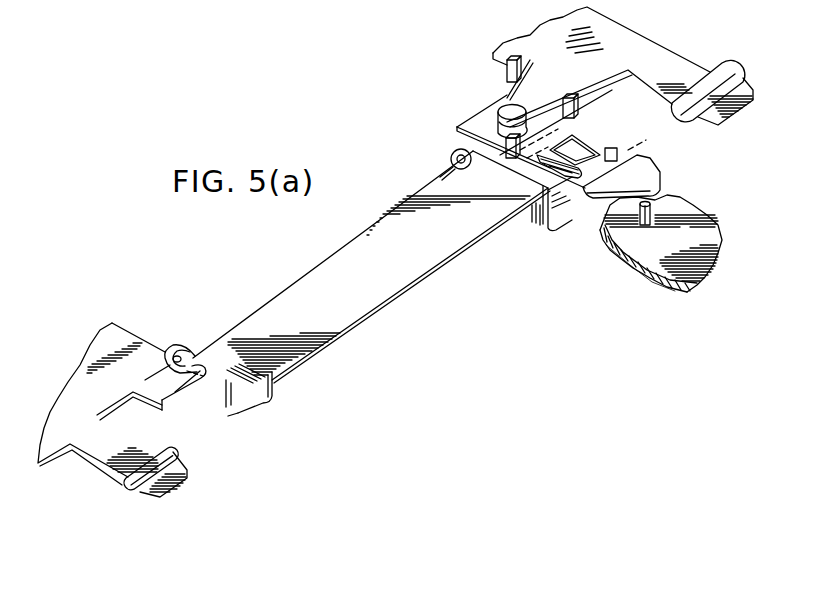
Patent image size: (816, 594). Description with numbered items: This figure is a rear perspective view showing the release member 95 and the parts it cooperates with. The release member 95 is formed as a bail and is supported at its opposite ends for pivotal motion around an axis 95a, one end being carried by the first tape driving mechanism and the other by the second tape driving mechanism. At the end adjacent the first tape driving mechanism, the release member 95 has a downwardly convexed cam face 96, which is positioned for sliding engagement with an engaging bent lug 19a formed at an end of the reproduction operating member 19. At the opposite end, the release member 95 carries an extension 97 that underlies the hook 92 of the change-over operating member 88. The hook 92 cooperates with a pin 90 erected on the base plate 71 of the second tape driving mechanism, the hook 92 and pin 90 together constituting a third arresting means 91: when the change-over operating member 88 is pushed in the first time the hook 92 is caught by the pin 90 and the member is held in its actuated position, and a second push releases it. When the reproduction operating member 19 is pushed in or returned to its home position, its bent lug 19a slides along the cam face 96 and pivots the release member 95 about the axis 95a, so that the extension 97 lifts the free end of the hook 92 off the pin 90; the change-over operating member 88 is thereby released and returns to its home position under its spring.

The change-over operating member 88 is at (643, 48).
The third arresting means 91 is at (598, 153).
The hook 92 is at (657, 181).
The pin 90 is at (650, 204).
The base plate 71 is at (680, 294).
The extension 97 is at (573, 228).
The release member 95 is at (421, 282).
The axis 95a is at (197, 343).
The engaging bent lug 19a is at (178, 398).
The cam face 96 is at (233, 417).
The reproduction operating member 19 is at (105, 476).